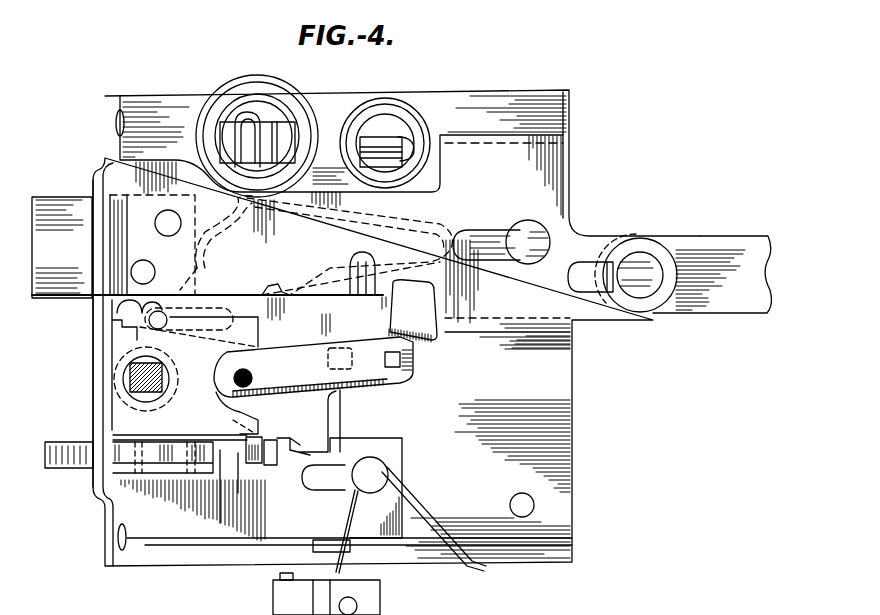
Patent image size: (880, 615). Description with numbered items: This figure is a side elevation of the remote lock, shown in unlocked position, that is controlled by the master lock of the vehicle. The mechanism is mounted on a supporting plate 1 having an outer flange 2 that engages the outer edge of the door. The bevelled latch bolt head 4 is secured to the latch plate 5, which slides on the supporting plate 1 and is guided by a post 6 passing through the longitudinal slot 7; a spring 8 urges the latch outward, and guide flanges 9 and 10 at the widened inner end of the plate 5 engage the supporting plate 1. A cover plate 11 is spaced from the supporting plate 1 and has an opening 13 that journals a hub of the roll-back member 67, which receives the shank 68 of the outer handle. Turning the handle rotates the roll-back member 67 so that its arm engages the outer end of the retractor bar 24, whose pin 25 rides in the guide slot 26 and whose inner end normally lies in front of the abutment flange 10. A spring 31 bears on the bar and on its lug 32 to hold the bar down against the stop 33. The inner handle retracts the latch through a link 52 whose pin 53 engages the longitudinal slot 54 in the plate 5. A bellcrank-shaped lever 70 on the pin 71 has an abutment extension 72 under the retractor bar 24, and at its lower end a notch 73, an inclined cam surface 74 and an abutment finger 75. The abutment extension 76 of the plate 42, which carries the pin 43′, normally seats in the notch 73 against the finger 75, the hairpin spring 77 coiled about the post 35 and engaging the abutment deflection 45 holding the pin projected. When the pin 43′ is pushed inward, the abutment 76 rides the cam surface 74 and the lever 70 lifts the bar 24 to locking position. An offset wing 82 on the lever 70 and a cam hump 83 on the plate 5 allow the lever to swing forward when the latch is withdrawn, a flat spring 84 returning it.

The supporting plate 1 is at (568, 98).
The outer flange 2 is at (97, 305).
The latch bolt head 4 is at (50, 200).
The latch plate 5 is at (551, 186).
The post 6 is at (532, 238).
The longitudinal slot 7 is at (480, 232).
The spring 8 is at (300, 93).
The guide flange 9 is at (467, 143).
The guide flange 10 is at (500, 334).
The cover plate 11 is at (118, 424).
The opening 13 is at (127, 402).
The retractor bar 24 is at (282, 294).
The pin 25 is at (160, 309).
The guide slot 26 is at (188, 303).
The spring 31 is at (405, 108).
The lug 32 is at (265, 290).
The stop 33 is at (347, 345).
The post 35 is at (390, 470).
The plate 42 is at (300, 512).
The pin 43′ is at (60, 470).
The abutment deflection 45 is at (360, 550).
The link 52 is at (742, 254).
The pin 53 is at (640, 272).
The longitudinal slot 54 is at (585, 261).
The roll-back member 67 is at (122, 327).
The shank 68 is at (132, 377).
The bellcrank-shaped lever 70 is at (340, 396).
The pin 71 is at (237, 383).
The abutment extension 72 is at (410, 370).
The notch 73 is at (272, 438).
The cam surface 74 is at (332, 462).
The abutment finger 75 is at (256, 465).
The abutment extension 76 is at (272, 466).
The hairpin spring 77 is at (430, 520).
The offset wing 82 is at (440, 310).
The cam hump 83 is at (370, 262).
The flat spring 84 is at (278, 355).